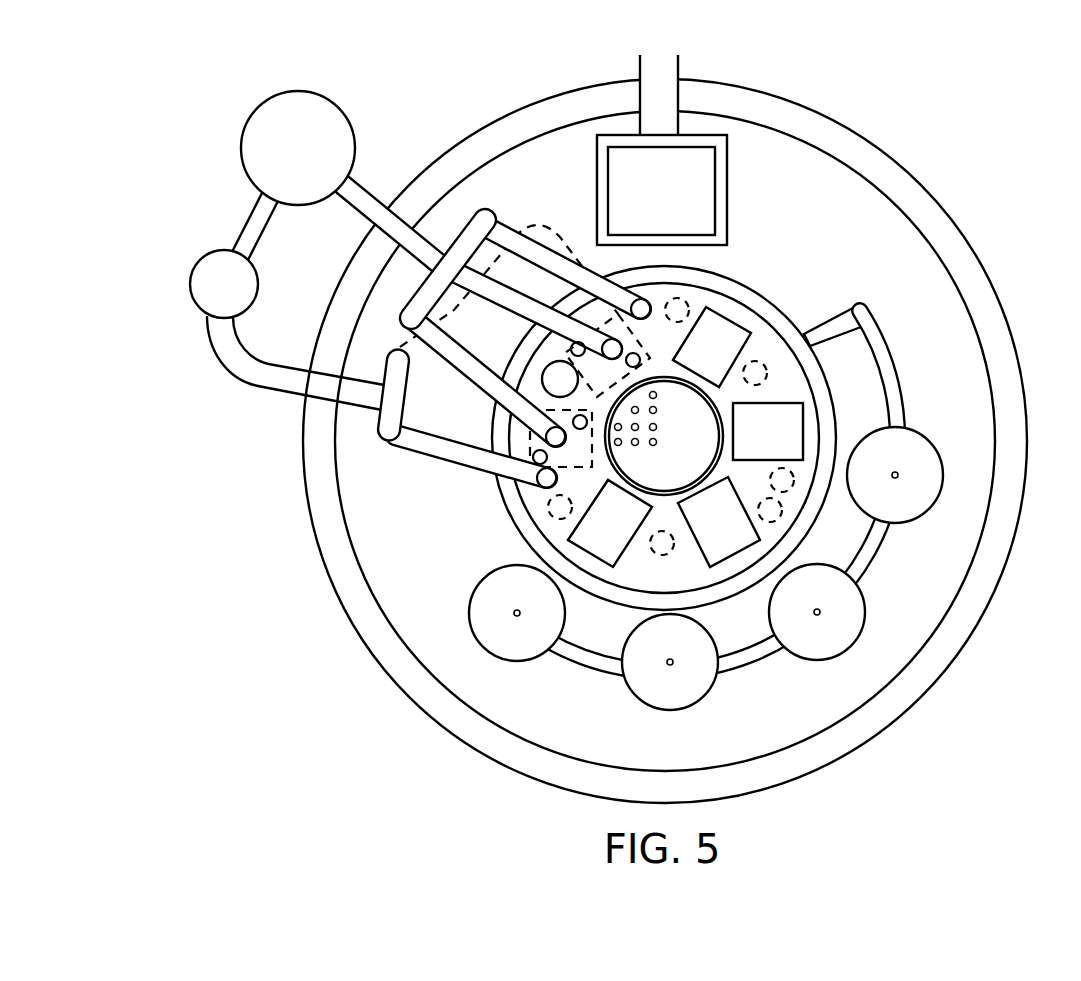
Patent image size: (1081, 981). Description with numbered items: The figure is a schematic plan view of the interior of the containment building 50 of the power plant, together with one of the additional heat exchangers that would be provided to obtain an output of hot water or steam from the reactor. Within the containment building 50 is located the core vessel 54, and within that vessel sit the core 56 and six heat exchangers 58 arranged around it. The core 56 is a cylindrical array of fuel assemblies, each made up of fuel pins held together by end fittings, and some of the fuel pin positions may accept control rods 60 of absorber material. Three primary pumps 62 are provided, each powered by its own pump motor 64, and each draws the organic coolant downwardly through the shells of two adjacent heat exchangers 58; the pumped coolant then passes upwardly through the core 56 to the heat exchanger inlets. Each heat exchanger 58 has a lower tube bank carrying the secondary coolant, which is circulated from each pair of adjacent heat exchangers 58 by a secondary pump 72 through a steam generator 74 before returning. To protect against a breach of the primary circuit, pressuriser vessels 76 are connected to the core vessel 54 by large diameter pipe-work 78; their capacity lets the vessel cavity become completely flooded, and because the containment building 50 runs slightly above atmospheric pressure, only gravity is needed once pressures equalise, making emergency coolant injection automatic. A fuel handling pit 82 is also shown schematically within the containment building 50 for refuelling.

The containment building 50 is at (877, 170).
The core vessel 54 is at (727, 288).
The core 56 is at (690, 452).
The heat exchangers 58 is at (723, 330).
The control rods 60 is at (638, 427).
The primary pumps 62 is at (767, 369).
The pump motor 64 is at (553, 383).
The secondary pump 72 is at (213, 285).
The steam generator 74 is at (272, 128).
The pressuriser vessels 76 is at (665, 687).
The pipe-work 78 is at (890, 370).
The fuel handling pit 82 is at (678, 192).